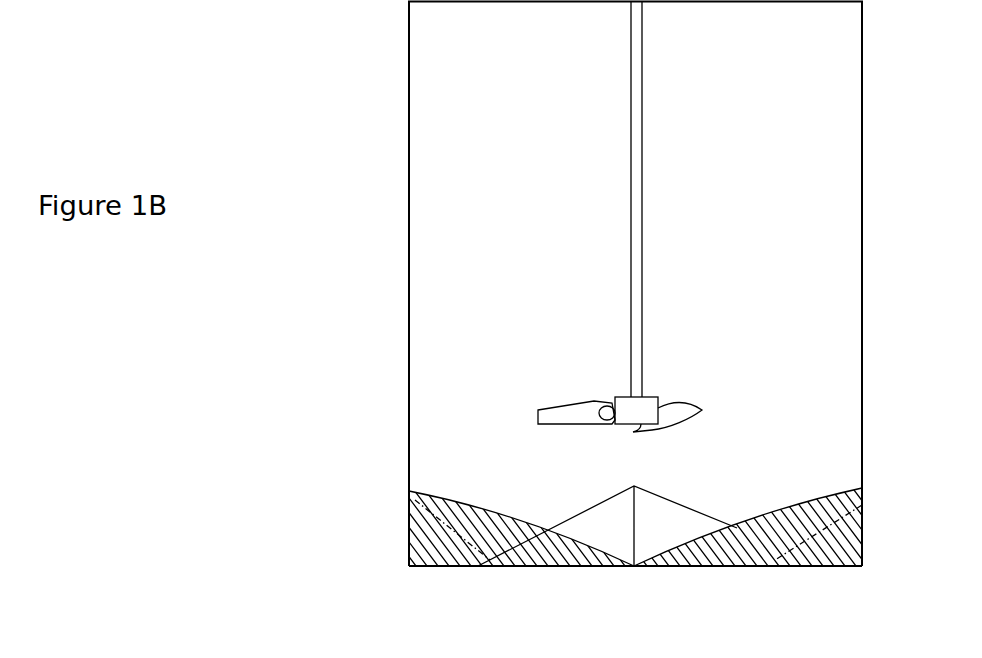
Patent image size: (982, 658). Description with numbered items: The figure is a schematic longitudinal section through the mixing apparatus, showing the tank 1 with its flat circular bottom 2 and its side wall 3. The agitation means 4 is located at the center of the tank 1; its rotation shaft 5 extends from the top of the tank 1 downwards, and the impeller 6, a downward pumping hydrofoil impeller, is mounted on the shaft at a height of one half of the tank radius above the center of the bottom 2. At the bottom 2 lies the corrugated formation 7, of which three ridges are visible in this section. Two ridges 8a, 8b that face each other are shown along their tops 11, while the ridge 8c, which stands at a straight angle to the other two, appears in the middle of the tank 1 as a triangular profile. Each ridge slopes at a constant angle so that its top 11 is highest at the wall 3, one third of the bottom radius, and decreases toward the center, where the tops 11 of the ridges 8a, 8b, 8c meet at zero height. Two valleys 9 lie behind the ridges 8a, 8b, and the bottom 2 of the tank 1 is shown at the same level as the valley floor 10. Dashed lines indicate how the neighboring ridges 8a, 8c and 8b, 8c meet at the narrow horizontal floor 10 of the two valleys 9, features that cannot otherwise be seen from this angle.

The tank 1 is at (386, 196).
The bottom 2 is at (433, 566).
The wall 3 is at (409, 315).
The agitation means 4 is at (652, 88).
The rotation shaft 5 is at (637, 235).
The impeller 6 is at (607, 405).
The corrugated formation 7 is at (742, 459).
The ridge 8a is at (420, 493).
The ridge 8b is at (797, 508).
The ridge 8c is at (607, 526).
The valley 9 is at (520, 558).
The valley floor 10 is at (862, 528).
The top of the ridge 11 is at (470, 512).